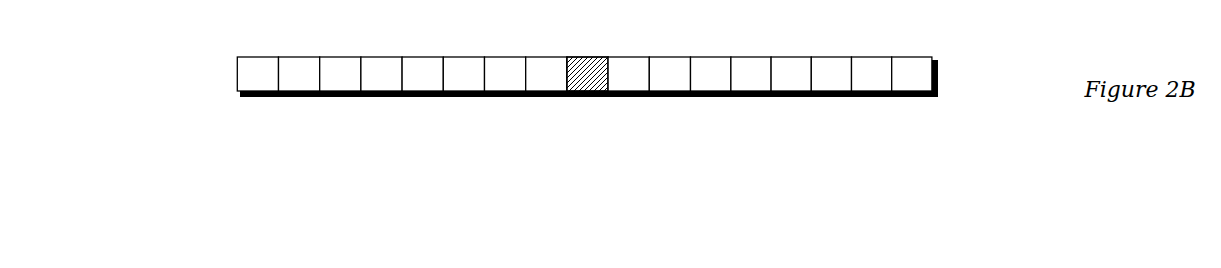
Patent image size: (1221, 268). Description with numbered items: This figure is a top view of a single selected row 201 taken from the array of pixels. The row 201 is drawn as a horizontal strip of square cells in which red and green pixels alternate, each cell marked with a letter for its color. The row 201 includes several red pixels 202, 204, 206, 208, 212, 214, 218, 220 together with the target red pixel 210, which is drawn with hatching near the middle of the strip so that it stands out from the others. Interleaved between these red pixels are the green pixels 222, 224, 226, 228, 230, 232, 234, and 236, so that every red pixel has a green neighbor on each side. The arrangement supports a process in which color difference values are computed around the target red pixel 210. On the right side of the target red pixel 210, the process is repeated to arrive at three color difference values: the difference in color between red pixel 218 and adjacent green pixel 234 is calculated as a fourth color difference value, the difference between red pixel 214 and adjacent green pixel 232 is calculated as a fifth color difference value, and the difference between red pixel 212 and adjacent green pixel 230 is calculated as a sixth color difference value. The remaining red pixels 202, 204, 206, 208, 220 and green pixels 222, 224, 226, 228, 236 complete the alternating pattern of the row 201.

The selected row 201 is at (674, 72).
The red pixel 202 is at (247, 97).
The red pixel 204 is at (330, 97).
The red pixel 206 is at (412, 97).
The red pixel 208 is at (494, 97).
The target red pixel 210 is at (577, 97).
The red pixel 212 is at (659, 97).
The red pixel 214 is at (741, 97).
The red pixel 218 is at (821, 97).
The red pixel 220 is at (902, 97).
The green pixel 222 is at (308, 57).
The green pixel 224 is at (390, 57).
The green pixel 226 is at (472, 57).
The green pixel 228 is at (555, 57).
The green pixel 230 is at (637, 57).
The green pixel 232 is at (720, 57).
The green pixel 234 is at (800, 57).
The green pixel 236 is at (880, 57).